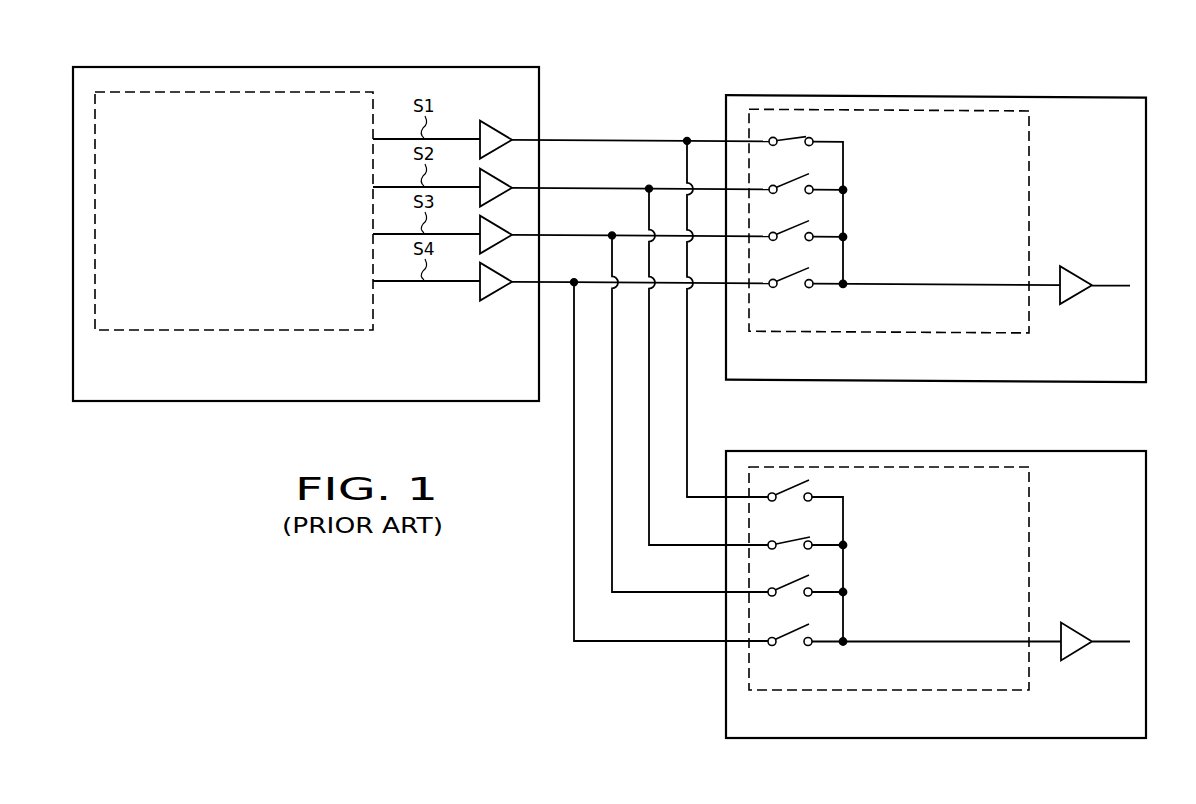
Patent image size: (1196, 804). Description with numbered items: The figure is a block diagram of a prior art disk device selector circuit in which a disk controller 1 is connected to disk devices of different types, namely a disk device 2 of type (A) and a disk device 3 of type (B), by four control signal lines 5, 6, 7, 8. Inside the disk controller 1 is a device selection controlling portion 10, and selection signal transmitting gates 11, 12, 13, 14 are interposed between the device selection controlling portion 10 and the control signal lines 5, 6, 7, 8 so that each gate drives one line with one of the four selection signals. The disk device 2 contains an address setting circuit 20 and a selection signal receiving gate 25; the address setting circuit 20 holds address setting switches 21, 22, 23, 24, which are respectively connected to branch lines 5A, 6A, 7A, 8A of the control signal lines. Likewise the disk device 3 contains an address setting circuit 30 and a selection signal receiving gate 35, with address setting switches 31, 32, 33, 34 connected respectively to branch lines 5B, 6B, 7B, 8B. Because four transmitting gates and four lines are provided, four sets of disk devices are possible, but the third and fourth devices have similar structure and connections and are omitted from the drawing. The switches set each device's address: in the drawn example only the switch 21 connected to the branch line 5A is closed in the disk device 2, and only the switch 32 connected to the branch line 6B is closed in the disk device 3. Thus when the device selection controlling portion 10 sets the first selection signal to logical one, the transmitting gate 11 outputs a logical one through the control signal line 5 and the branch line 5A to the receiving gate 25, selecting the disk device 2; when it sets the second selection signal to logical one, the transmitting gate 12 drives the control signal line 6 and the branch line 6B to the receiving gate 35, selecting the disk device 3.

The disk controller 1 is at (178, 401).
The device selection controlling portion 10 is at (231, 90).
The selection signal transmitting gate 11 is at (494, 128).
The selection signal transmitting gate 12 is at (498, 181).
The selection signal transmitting gate 13 is at (498, 229).
The selection signal transmitting gate 14 is at (498, 276).
The control signal line 5 is at (576, 138).
The control signal line 6 is at (576, 186).
The control signal line 7 is at (576, 233).
The control signal line 8 is at (576, 280).
The branch line 5A is at (689, 138).
The branch line 6A is at (655, 186).
The branch line 7A is at (663, 233).
The branch line 8A is at (663, 281).
The branch line 5B is at (687, 413).
The branch line 6B is at (649, 522).
The branch line 7B is at (612, 572).
The branch line 8B is at (576, 625).
The disk device of type (A) 2 is at (1146, 313).
The address setting circuit 20 is at (869, 107).
The address setting switch 21 is at (793, 136).
The address setting switch 22 is at (793, 177).
The address setting switch 23 is at (793, 225).
The address setting switch 24 is at (793, 274).
The selection signal receiving gate 25 is at (1073, 265).
The disk device of type (B) 3 is at (1146, 627).
The address setting circuit 30 is at (869, 466).
The address setting switch 31 is at (791, 491).
The address setting switch 32 is at (793, 539).
The address setting switch 33 is at (793, 585).
The address setting switch 34 is at (793, 632).
The selection signal receiving gate 35 is at (1075, 630).